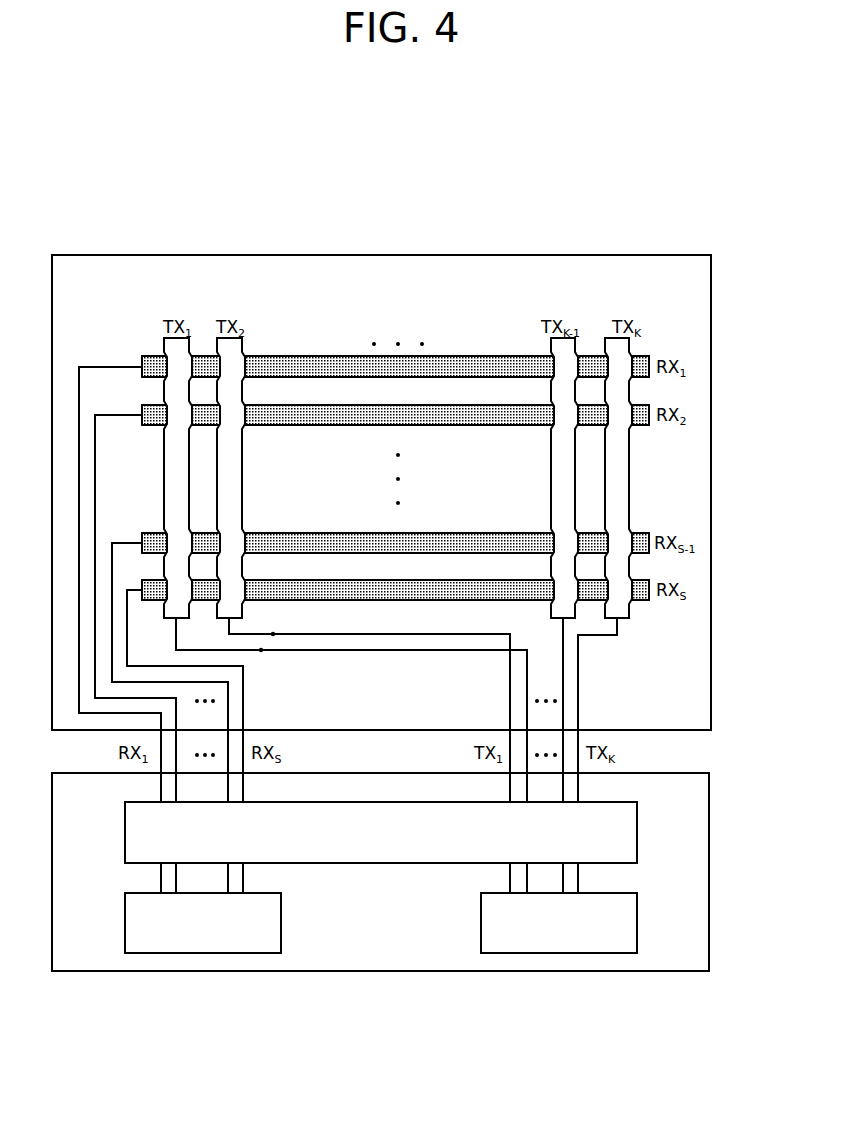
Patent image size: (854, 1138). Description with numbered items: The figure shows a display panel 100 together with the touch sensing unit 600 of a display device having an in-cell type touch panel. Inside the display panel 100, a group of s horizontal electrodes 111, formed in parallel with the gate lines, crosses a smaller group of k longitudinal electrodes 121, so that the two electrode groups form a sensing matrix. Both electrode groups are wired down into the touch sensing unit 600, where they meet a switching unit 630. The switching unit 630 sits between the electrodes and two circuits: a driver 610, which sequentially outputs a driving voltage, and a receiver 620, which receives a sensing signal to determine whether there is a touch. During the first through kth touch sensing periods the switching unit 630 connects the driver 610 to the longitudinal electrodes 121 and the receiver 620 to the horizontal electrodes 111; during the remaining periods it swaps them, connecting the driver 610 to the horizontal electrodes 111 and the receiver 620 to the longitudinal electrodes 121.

The display panel 100 is at (711, 458).
The horizontal electrodes 111 is at (650, 356).
The longitudinal electrodes 121 is at (603, 336).
The touch sensing unit 600 is at (709, 870).
The driver 610 is at (559, 923).
The receiver 620 is at (203, 923).
The switching unit 630 is at (381, 832).